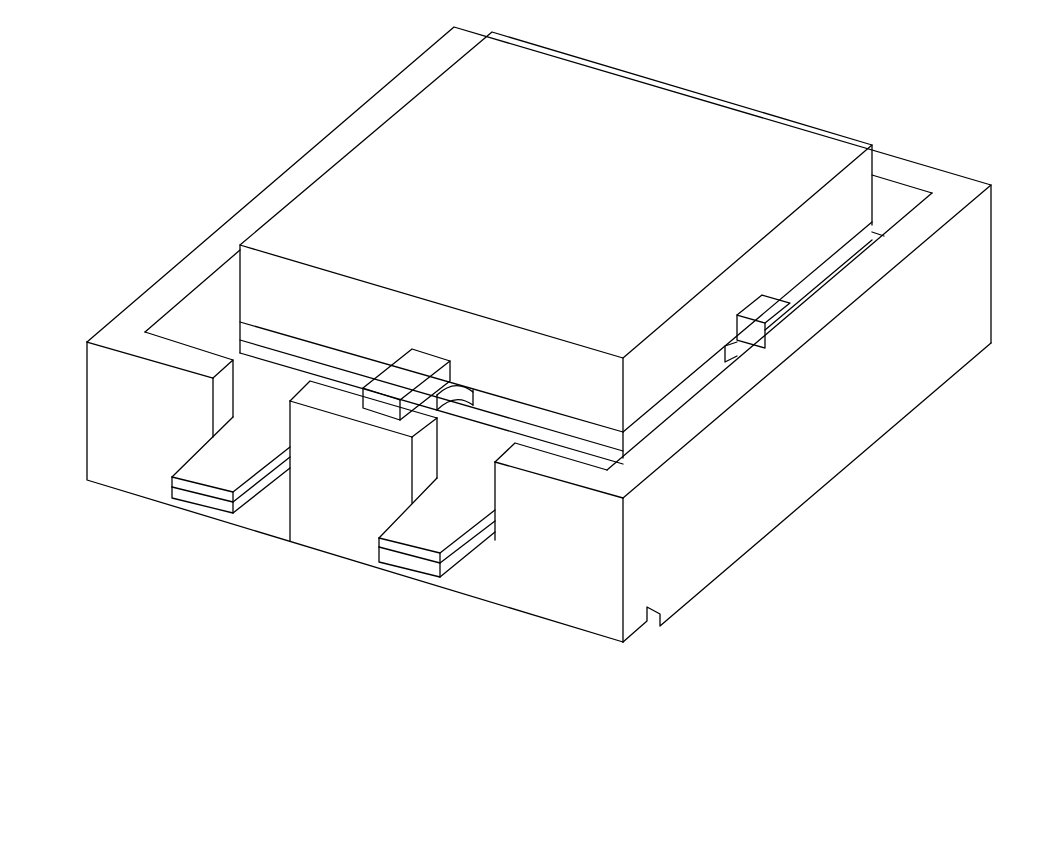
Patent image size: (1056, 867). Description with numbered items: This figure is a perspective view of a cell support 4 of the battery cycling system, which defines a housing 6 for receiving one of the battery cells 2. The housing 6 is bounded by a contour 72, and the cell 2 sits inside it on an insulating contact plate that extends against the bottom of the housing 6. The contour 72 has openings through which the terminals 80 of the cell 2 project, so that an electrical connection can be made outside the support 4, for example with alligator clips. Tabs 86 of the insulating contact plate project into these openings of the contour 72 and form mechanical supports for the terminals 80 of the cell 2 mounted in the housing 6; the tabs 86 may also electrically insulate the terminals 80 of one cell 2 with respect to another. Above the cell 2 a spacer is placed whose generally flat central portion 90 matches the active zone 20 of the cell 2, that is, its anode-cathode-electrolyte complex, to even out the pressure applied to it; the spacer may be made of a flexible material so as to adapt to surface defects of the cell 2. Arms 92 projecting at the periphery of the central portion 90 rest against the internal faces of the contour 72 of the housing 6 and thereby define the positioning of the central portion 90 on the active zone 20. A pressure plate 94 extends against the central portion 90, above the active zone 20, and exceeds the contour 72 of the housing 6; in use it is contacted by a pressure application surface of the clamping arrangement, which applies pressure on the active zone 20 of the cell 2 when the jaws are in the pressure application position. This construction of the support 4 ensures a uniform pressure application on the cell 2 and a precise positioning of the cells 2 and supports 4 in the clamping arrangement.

The battery cell 2 is at (474, 450).
The support 4 is at (238, 128).
The housing 6 is at (889, 212).
The active zone 20 is at (255, 348).
The contour of the housing 72 is at (961, 188).
The terminals 80 is at (198, 466).
The tabs 86 is at (204, 500).
The central portion 90 is at (252, 332).
The arms 92 is at (396, 388).
The pressure plate 94 is at (744, 123).